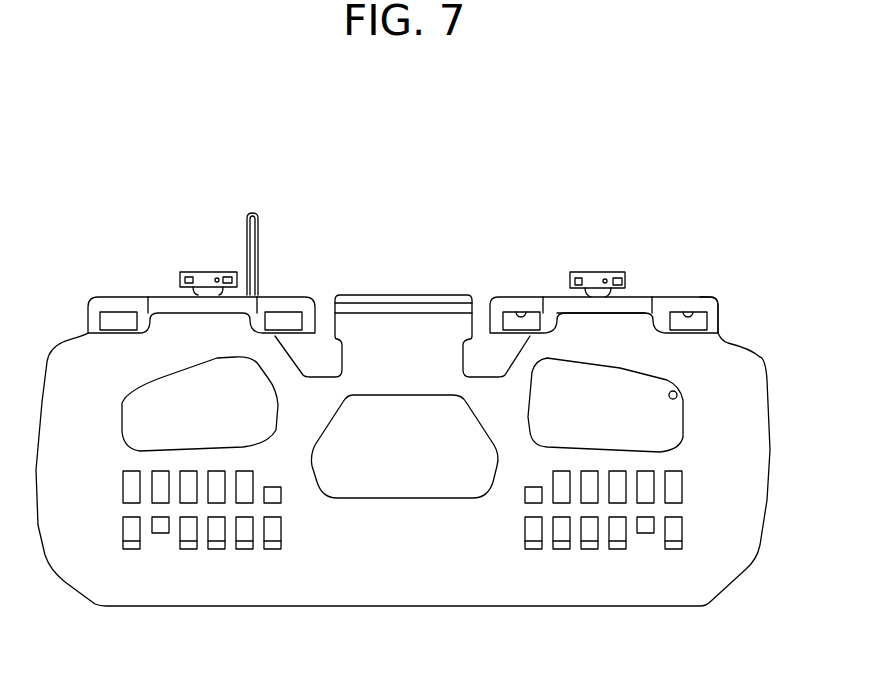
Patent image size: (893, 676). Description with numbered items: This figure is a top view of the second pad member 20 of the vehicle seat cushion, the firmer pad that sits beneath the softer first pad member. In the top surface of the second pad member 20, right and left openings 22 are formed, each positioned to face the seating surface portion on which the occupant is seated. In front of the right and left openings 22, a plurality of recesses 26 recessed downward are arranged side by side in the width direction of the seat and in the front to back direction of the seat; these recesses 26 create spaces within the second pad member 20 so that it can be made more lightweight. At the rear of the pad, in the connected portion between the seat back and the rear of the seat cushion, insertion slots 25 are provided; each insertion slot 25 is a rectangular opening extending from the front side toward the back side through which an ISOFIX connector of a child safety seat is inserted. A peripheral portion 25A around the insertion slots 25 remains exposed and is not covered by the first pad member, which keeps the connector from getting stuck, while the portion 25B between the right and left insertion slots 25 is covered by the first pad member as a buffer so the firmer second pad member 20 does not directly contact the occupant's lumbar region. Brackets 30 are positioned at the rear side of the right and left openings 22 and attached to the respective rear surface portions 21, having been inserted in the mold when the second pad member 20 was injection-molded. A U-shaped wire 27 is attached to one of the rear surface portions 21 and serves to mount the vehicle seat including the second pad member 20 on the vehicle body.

The second pad member 20 is at (698, 154).
The rear surface portion 21 is at (159, 280).
The opening 22 is at (680, 397).
The insertion slot 25 is at (522, 312).
The peripheral portion 25A is at (707, 305).
The portion between the insertion slots 25B is at (620, 323).
The recess 26 is at (528, 522).
The wire 27 is at (258, 211).
The bracket 30 is at (200, 245).